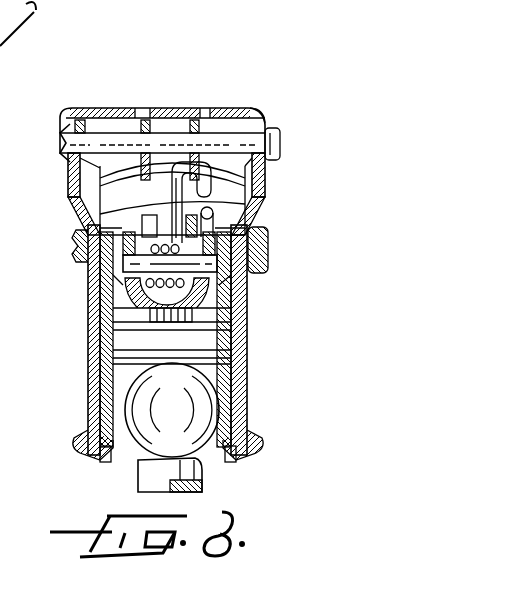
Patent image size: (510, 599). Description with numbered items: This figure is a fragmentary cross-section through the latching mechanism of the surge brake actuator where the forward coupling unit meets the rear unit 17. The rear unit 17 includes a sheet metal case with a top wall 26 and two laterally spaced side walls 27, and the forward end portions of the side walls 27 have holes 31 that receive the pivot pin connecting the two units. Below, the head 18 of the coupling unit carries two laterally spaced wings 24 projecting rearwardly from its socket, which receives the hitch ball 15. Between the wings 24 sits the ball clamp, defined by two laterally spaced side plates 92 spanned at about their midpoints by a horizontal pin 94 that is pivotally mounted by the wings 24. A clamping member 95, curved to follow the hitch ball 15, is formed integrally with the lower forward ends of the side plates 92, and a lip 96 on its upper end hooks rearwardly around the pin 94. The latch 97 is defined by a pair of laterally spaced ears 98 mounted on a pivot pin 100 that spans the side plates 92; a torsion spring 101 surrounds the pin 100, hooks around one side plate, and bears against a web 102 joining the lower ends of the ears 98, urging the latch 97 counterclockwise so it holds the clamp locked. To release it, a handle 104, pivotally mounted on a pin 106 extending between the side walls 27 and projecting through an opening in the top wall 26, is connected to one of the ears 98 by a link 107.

The rear unit 17 is at (212, 98).
The top wall 26 is at (8, 88).
The pin 106 is at (110, 133).
The handle 104 is at (197, 128).
The link 107 is at (205, 168).
The ears 98 is at (82, 207).
The torsion spring 101 is at (167, 217).
The pivot pin 100 is at (77, 238).
The head 18 is at (264, 241).
The wings 24 is at (88, 292).
The web 102 is at (248, 333).
The latch 97 is at (95, 308).
The horizontal pin 94 is at (113, 327).
The lip 96 is at (113, 352).
The side plates 92 is at (82, 407).
The clamping member 95 is at (185, 405).
The side walls 27 is at (83, 380).
The hitch ball 15 is at (142, 477).
The holes 31 is at (227, 451).